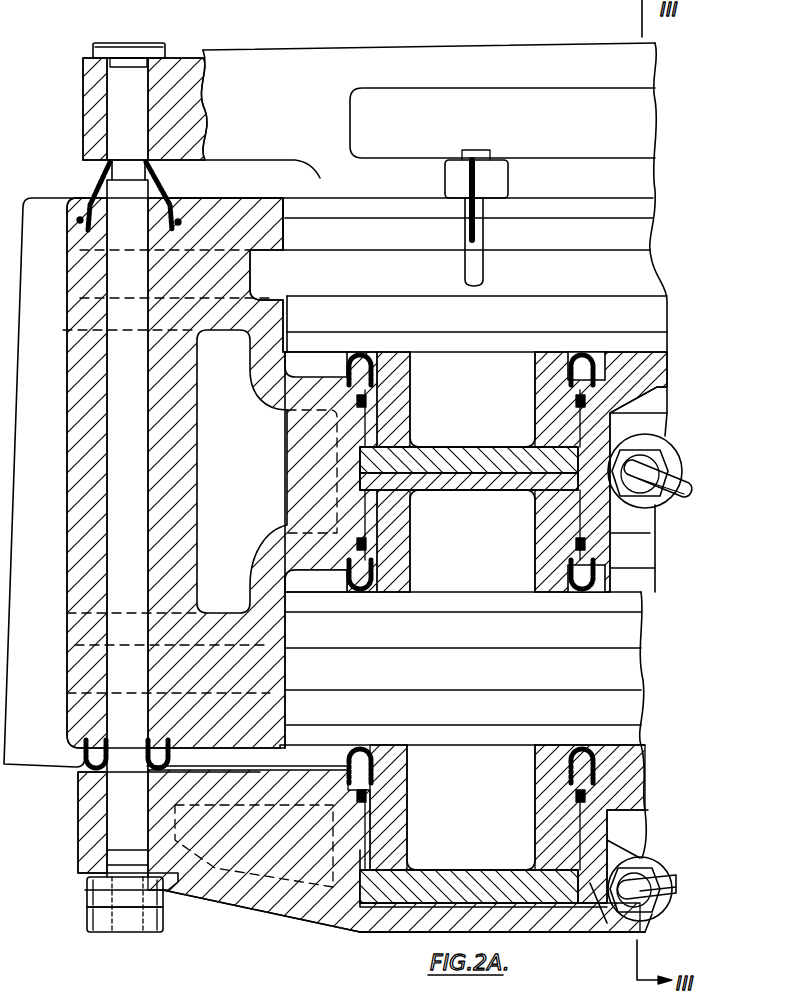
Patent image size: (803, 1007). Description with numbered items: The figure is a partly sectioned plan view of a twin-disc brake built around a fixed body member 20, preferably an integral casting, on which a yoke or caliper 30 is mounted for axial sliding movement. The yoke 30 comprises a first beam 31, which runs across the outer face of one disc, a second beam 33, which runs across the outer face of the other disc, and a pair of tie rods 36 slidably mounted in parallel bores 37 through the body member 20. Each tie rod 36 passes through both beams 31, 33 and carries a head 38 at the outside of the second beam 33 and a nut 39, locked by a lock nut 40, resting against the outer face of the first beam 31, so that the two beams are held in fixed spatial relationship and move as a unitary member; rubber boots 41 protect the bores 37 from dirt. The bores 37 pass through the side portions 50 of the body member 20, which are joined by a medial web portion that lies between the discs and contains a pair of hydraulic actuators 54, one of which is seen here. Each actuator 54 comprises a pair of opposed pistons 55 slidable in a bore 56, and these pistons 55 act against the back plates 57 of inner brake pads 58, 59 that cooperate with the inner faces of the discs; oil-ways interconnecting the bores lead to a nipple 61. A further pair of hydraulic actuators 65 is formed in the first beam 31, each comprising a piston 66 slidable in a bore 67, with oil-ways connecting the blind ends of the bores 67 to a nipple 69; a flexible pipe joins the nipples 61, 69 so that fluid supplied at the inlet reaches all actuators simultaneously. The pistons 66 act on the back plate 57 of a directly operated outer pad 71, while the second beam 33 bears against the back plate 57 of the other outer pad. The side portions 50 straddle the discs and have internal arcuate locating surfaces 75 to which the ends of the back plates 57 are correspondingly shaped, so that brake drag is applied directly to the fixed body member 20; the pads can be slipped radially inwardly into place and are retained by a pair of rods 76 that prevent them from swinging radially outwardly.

The body member 20 is at (44, 482).
The yoke or caliper 30 is at (318, 922).
The first beam 31 is at (385, 935).
The second beam 33 is at (275, 47).
The tie rod 36 is at (122, 566).
The bore 37 is at (110, 490).
The head 38 is at (128, 42).
The nut 39 is at (85, 893).
The lock nut 40 is at (85, 917).
The rubber boot 41 is at (100, 196).
The side portion 50 is at (72, 240).
The hydraulic actuator 54 is at (495, 569).
The opposed piston 55 is at (483, 433).
The bore 56 is at (375, 420).
The back plate 57 is at (565, 190).
The inner brake pad 58 is at (550, 644).
The inner brake pad 59 is at (516, 296).
The nipple 61 is at (665, 452).
The hydraulic actuator 65 is at (490, 814).
The piston 66 is at (457, 870).
The bore 67 is at (372, 800).
The nipple 69 is at (652, 905).
The directly operated outer pad 71 is at (450, 672).
The arcuate locating surface 75 is at (287, 347).
The rod 76 is at (485, 236).